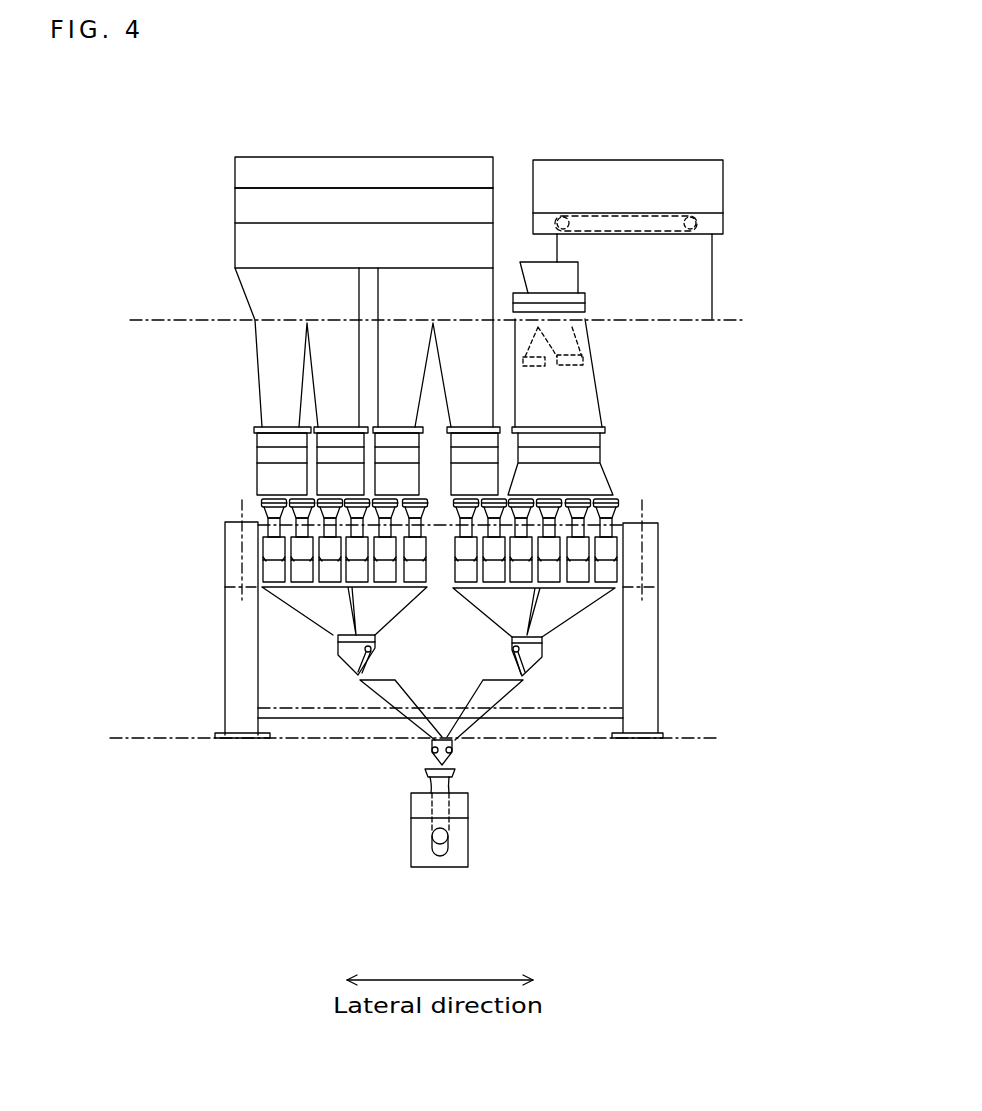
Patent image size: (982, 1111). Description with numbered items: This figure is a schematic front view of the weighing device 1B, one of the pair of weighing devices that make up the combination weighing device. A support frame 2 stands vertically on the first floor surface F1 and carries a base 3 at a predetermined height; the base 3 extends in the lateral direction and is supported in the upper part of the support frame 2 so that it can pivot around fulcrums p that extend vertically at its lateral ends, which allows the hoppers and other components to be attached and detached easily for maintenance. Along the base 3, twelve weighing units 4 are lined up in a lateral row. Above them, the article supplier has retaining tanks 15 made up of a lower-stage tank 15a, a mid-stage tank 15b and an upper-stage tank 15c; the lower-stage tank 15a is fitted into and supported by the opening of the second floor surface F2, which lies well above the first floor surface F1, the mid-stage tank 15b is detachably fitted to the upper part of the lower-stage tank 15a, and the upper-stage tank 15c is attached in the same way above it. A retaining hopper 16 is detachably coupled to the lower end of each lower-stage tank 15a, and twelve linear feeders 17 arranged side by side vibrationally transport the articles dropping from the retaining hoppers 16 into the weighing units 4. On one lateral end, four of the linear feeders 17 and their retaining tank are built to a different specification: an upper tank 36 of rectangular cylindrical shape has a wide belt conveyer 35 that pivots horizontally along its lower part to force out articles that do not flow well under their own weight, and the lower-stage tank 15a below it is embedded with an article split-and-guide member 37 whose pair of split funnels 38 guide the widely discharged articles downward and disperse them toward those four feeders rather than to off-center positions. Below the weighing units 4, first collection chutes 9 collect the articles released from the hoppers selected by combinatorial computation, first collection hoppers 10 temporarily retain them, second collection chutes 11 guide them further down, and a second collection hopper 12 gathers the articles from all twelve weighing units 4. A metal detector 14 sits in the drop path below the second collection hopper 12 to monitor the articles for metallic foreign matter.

The weighing device 1B is at (165, 450).
The support frame 2 is at (222, 688).
The base 3 is at (625, 522).
The weighing unit 4 is at (280, 549).
The first collection chute 9 is at (305, 616).
The first collection hopper 10 is at (345, 660).
The second collection chute 11 is at (422, 685).
The second collection hopper 12 is at (455, 745).
The metal detector 14 is at (468, 846).
The retaining tank 15 is at (355, 155).
The lower-stage tank 15a is at (258, 372).
The mid-stage tank 15b is at (248, 301).
The upper-stage tank 15c is at (235, 212).
The retaining hopper 16 is at (257, 480).
The linear feeder 17 is at (462, 497).
The belt conveyer 35 is at (672, 213).
The upper tank 36 is at (723, 183).
The article split-and-guide member 37 is at (582, 341).
The split funnel 38 is at (520, 340).
The first floor surface F1 is at (127, 736).
The second floor surface F2 is at (146, 318).
The fulcrum p is at (240, 592).